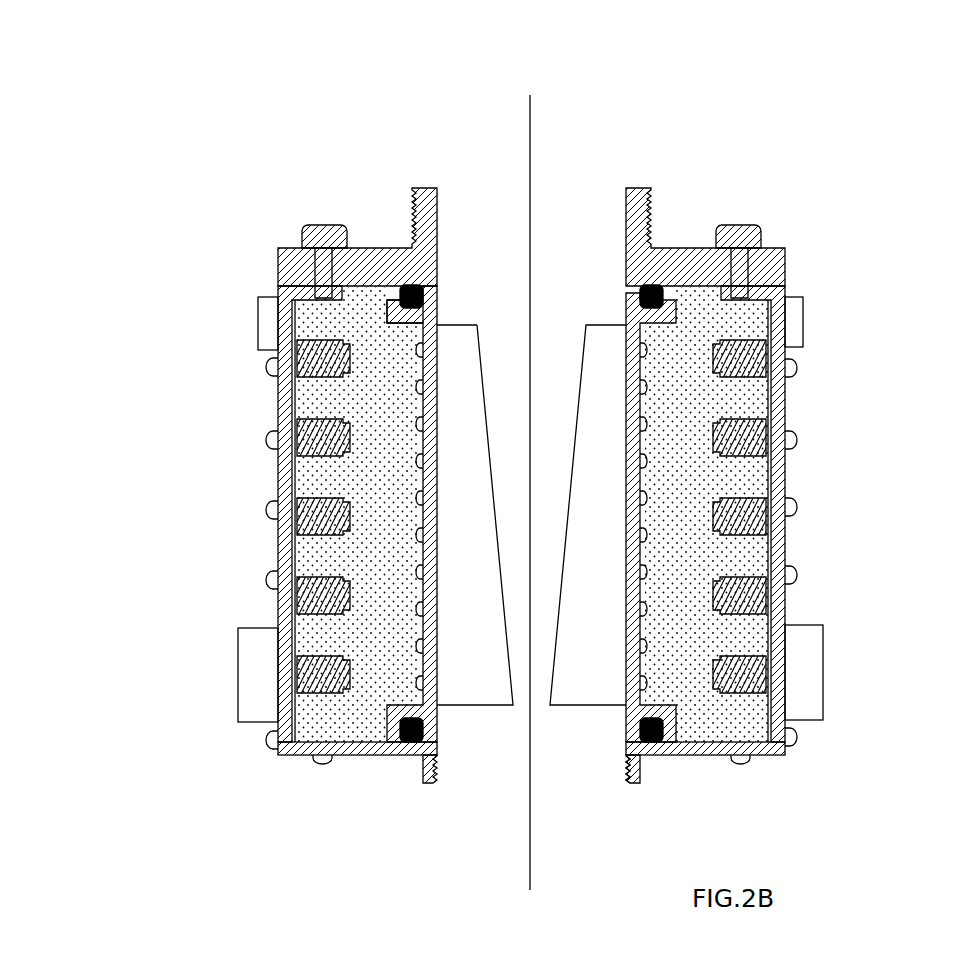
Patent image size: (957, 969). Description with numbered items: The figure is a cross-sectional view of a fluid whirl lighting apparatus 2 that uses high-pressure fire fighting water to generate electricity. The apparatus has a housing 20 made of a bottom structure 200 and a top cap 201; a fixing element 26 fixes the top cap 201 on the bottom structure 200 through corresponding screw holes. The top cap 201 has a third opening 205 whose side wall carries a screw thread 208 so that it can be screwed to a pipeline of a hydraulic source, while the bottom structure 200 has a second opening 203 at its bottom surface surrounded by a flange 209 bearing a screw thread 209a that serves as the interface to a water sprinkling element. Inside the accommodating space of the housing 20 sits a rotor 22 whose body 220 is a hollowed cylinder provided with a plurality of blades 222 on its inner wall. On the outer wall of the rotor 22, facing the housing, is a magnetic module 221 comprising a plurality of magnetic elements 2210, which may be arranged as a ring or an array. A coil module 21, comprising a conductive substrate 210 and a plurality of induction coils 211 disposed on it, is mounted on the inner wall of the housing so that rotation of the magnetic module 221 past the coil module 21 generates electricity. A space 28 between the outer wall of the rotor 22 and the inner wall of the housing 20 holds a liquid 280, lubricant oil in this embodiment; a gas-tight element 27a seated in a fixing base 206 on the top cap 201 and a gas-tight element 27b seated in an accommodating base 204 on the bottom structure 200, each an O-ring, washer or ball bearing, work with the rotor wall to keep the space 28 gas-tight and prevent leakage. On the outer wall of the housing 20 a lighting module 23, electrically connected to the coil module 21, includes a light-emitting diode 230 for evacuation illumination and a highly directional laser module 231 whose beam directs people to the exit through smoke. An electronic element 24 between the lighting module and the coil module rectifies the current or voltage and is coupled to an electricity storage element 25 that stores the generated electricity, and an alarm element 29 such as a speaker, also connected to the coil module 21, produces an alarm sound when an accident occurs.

The fluid whirl lighting apparatus 2 is at (139, 132).
The housing 20 is at (264, 230).
The bottom structure 200 is at (278, 402).
The top cap 201 is at (368, 250).
The second opening 203 is at (470, 770).
The accommodating base 204 is at (392, 718).
The third opening 205 is at (500, 215).
The fixing base 206 is at (388, 308).
The screw thread 208 is at (652, 223).
The flange 209 is at (641, 779).
The screw thread 209a is at (628, 770).
The coil module 21 is at (697, 421).
The conductive substrate 210 is at (295, 628).
The induction coils 211 is at (297, 525).
The rotor 22 is at (608, 290).
The body 220 is at (432, 710).
The magnetic module 221 is at (399, 403).
The magnetic elements 2210 is at (416, 453).
The blades 222 is at (455, 345).
The lighting module 23 is at (108, 740).
The light-emitting diode 230 is at (245, 588).
The laser module 231 is at (245, 745).
The electronic element 24 is at (265, 320).
The electricity storage element 25 is at (797, 320).
The fixing element 26 is at (316, 228).
The gas-tight element 27a is at (663, 305).
The gas-tight element 27b is at (680, 755).
The space 28 is at (687, 549).
The liquid 280 is at (752, 548).
The alarm element 29 is at (825, 663).